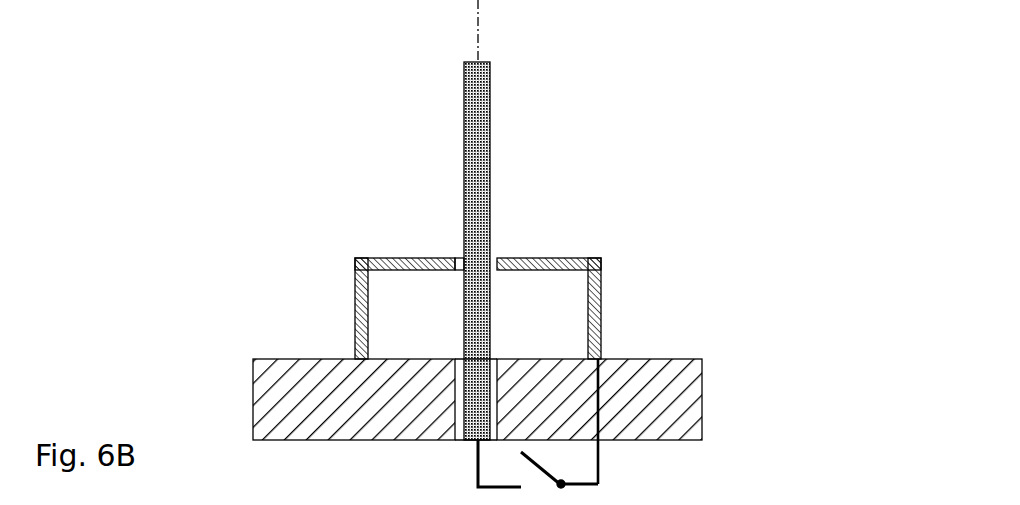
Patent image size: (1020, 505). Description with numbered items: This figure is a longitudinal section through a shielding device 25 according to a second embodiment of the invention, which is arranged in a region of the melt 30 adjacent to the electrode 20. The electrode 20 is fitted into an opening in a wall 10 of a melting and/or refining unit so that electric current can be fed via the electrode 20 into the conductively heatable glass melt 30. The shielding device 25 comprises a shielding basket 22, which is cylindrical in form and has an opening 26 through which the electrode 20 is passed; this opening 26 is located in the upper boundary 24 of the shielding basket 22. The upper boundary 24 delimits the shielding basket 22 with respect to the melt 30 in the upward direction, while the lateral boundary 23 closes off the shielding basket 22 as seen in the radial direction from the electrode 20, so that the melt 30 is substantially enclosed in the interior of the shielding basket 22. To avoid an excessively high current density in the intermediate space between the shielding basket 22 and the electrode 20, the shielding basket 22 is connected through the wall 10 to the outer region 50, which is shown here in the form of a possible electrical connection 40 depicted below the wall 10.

The wall 10 is at (702, 392).
The electrode 20 is at (491, 68).
The shielding basket 22 is at (322, 256).
The lateral boundary 23 is at (602, 317).
The upper boundary 24 is at (553, 257).
The shielding device 25 is at (826, 55).
The opening 26 is at (460, 258).
The melt 30 is at (478, 252).
The electrical connection 40 is at (600, 455).
The outer region 50 is at (317, 481).